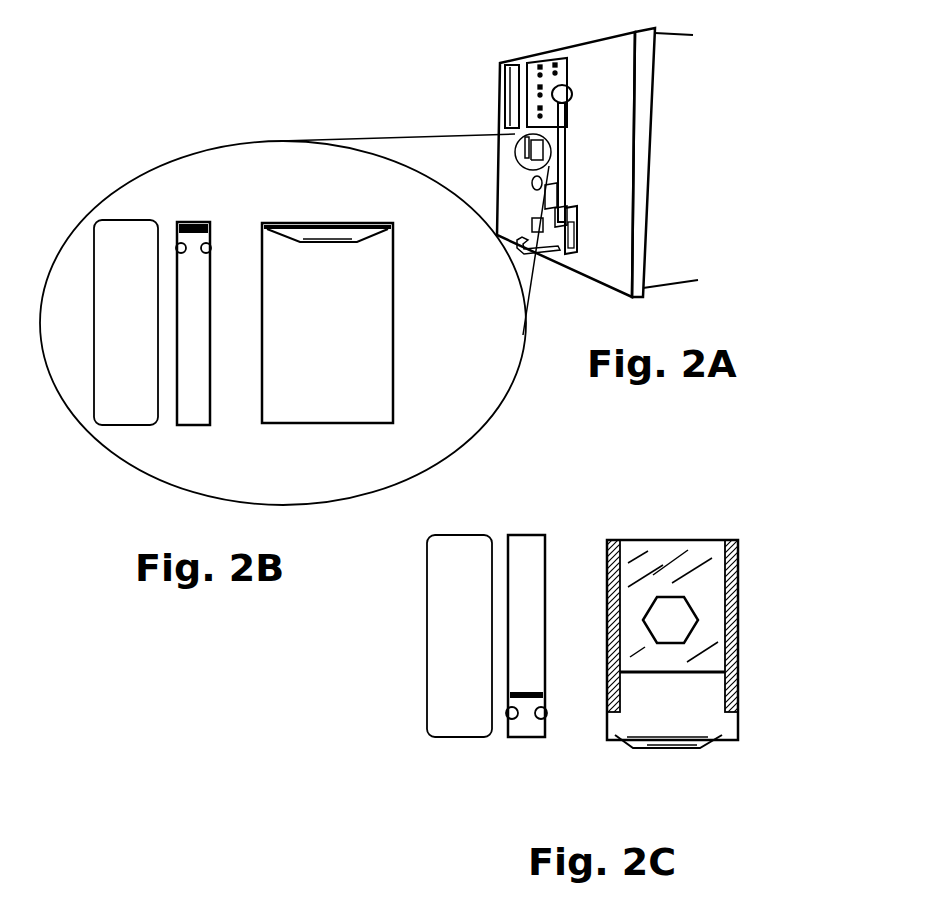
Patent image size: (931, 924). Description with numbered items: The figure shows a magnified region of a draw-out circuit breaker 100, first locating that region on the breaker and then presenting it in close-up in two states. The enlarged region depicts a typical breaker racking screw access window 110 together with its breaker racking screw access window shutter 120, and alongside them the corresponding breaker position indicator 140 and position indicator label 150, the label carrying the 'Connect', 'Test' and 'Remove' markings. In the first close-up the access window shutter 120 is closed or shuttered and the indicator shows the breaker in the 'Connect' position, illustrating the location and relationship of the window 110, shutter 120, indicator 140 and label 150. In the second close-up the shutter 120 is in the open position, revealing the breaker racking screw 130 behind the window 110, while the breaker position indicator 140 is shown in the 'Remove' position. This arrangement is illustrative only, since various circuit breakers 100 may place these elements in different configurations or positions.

In FIG. 2A, the draw-out circuit breaker 100 is at (664, 214).
In FIG. 2B, the breaker racking screw access window 110 is at (362, 350).
In FIG. 2C, the breaker racking screw access window 110 is at (705, 638).
In FIG. 2B, the breaker racking screw access window shutter 120 is at (333, 338).
In FIG. 2C, the breaker racking screw access window shutter 120 is at (660, 742).
In FIG. 2C, the breaker racking screw 130 is at (667, 612).
In FIG. 2B, the breaker position indicator 140 is at (192, 413).
In FIG. 2C, the breaker position indicator 140 is at (523, 727).
In FIG. 2B, the position indicator label 150 is at (120, 230).
In FIG. 2C, the position indicator label 150 is at (453, 663).